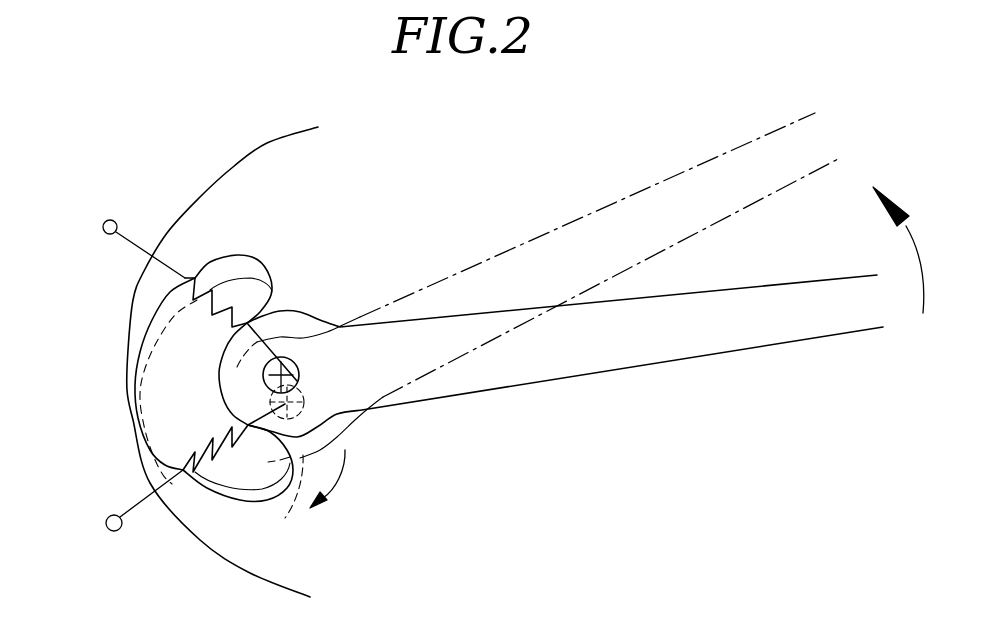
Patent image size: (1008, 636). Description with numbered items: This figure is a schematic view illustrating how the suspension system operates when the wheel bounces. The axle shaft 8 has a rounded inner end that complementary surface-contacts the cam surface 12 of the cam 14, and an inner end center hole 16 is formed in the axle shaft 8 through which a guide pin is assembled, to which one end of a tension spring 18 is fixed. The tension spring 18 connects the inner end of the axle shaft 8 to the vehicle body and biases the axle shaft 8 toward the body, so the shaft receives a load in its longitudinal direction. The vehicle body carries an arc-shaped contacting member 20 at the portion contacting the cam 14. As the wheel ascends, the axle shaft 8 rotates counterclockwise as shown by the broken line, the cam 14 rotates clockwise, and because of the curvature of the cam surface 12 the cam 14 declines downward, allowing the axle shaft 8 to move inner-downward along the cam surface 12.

The axle shaft 8 is at (562, 363).
The cam surface 12 is at (208, 262).
The cam 14 is at (279, 303).
The inner end center hole 16 is at (297, 378).
The tension spring 18 is at (135, 245).
The arc-shaped contacting member 20 is at (228, 165).